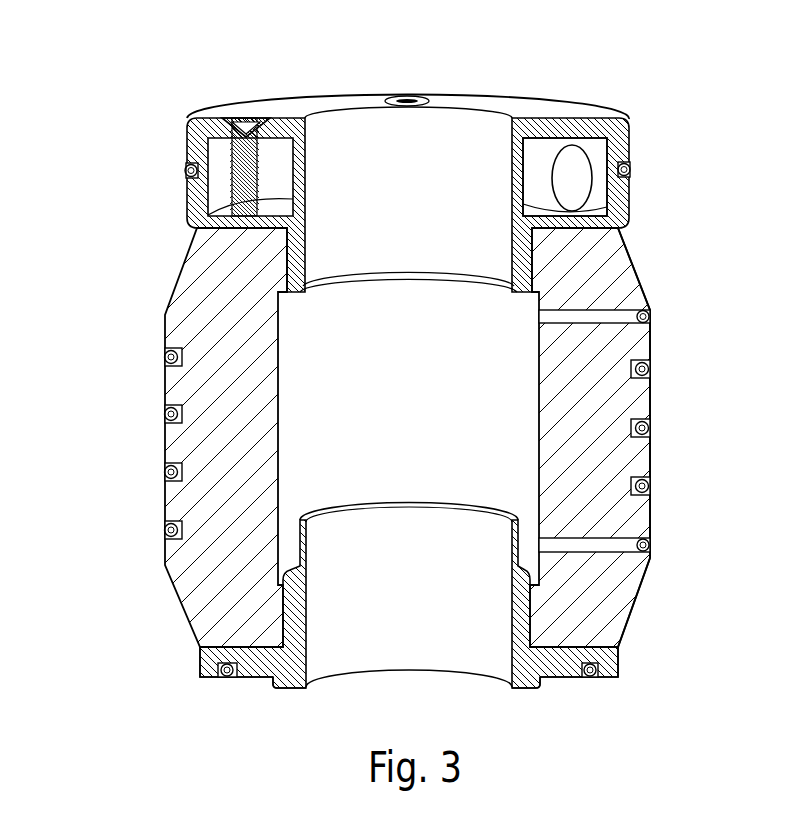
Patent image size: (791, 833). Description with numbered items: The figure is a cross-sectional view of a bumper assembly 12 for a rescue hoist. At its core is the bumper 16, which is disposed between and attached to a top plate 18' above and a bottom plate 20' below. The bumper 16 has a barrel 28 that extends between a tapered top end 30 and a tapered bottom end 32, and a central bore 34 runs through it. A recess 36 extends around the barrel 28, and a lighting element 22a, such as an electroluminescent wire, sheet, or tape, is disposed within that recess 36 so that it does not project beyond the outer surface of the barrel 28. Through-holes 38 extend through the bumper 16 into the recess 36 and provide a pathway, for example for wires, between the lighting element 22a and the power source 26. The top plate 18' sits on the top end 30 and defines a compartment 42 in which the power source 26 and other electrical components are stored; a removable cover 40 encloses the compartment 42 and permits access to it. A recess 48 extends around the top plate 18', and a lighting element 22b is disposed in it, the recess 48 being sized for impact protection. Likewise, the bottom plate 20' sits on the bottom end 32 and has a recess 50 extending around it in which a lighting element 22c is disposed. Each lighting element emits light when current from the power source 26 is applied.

The bumper assembly 12 is at (122, 100).
The top plate 18' is at (436, 155).
The cover 40 is at (303, 105).
The power source 26 is at (572, 180).
The compartment 42 is at (600, 150).
The recess 48 is at (625, 163).
The lighting element 22b is at (185, 172).
The bumper 16 is at (170, 279).
The top end 30 is at (627, 252).
The through-holes 38 is at (598, 316).
The recess 36 is at (633, 361).
The barrel 28 is at (650, 398).
The lighting element 22a is at (163, 355).
The central bore 34 is at (400, 526).
The bottom end 32 is at (642, 595).
The recess 50 is at (220, 668).
The lighting element 22c is at (228, 680).
The bottom plate 20' is at (354, 714).